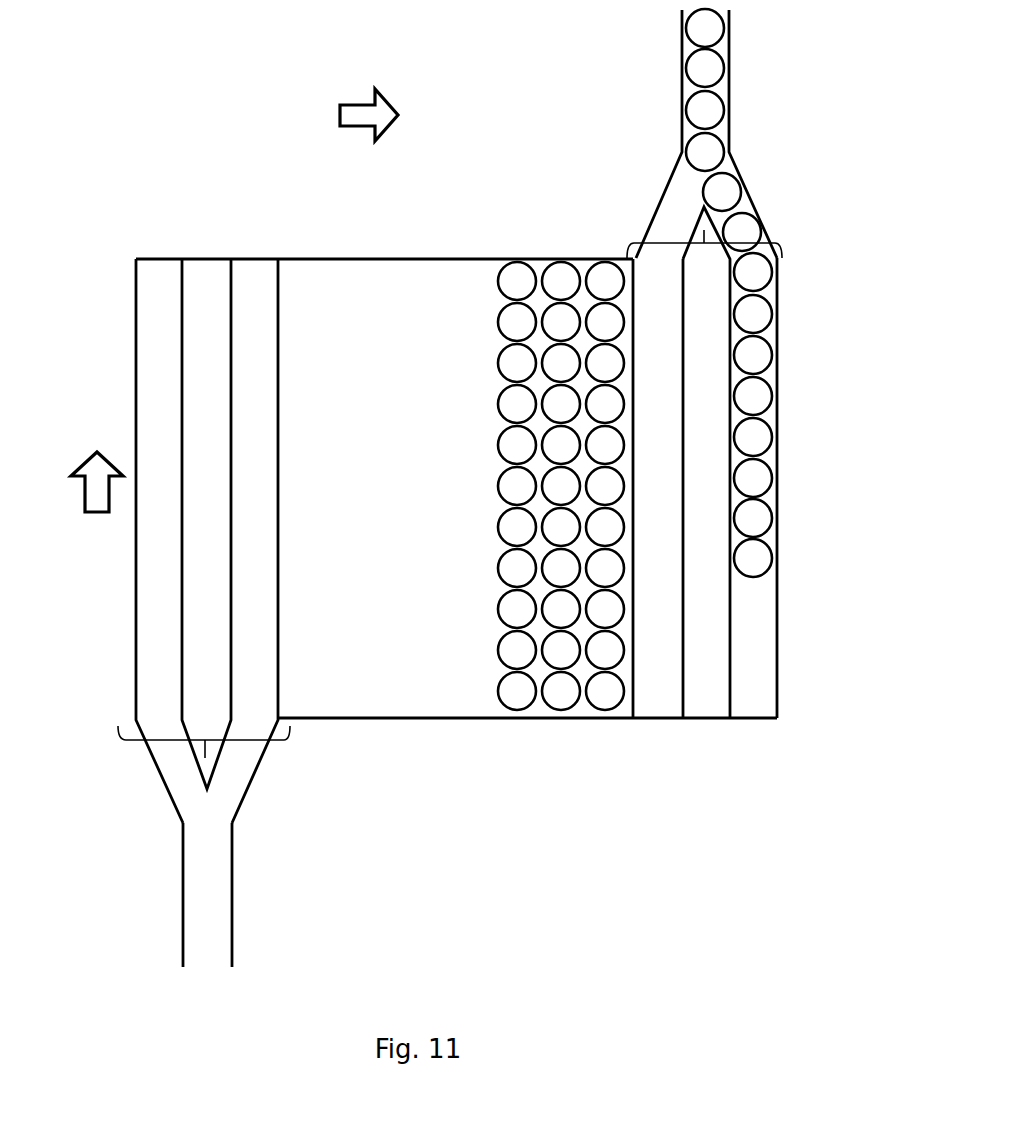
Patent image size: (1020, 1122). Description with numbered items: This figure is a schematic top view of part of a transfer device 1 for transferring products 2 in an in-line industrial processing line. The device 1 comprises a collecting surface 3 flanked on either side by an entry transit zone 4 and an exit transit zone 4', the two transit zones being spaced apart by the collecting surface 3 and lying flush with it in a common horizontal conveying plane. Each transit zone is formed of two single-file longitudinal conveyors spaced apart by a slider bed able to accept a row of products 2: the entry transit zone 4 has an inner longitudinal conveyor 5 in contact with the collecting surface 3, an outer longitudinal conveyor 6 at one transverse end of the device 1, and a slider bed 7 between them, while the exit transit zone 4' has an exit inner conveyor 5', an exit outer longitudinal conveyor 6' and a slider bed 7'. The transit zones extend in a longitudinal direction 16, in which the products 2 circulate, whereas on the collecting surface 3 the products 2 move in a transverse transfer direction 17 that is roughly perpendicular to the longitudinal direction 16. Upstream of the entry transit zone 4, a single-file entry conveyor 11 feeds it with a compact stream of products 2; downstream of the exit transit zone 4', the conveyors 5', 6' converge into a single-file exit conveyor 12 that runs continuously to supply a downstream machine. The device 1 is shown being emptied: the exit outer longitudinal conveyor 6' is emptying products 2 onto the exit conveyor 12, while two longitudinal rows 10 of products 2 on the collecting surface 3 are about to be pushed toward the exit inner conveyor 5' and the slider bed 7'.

The transfer device 1 is at (150, 138).
The products 2 is at (522, 272).
The collecting surface 3 is at (437, 282).
The entry transit zone 4 is at (177, 794).
The exit transit zone 4' is at (739, 205).
The inner longitudinal conveyor 5 is at (259, 493).
The exit inner longitudinal conveyor 5' is at (699, 562).
The outer longitudinal conveyor 6 is at (133, 541).
The exit outer longitudinal conveyor 6' is at (825, 485).
The slider bed 7 is at (208, 476).
The slider bed 7' is at (752, 517).
The longitudinal rows 10 is at (564, 730).
The entry conveyor 11 is at (203, 897).
The exit conveyor 12 is at (720, 92).
The longitudinal direction 16 is at (68, 452).
The transverse transfer direction 17 is at (402, 92).